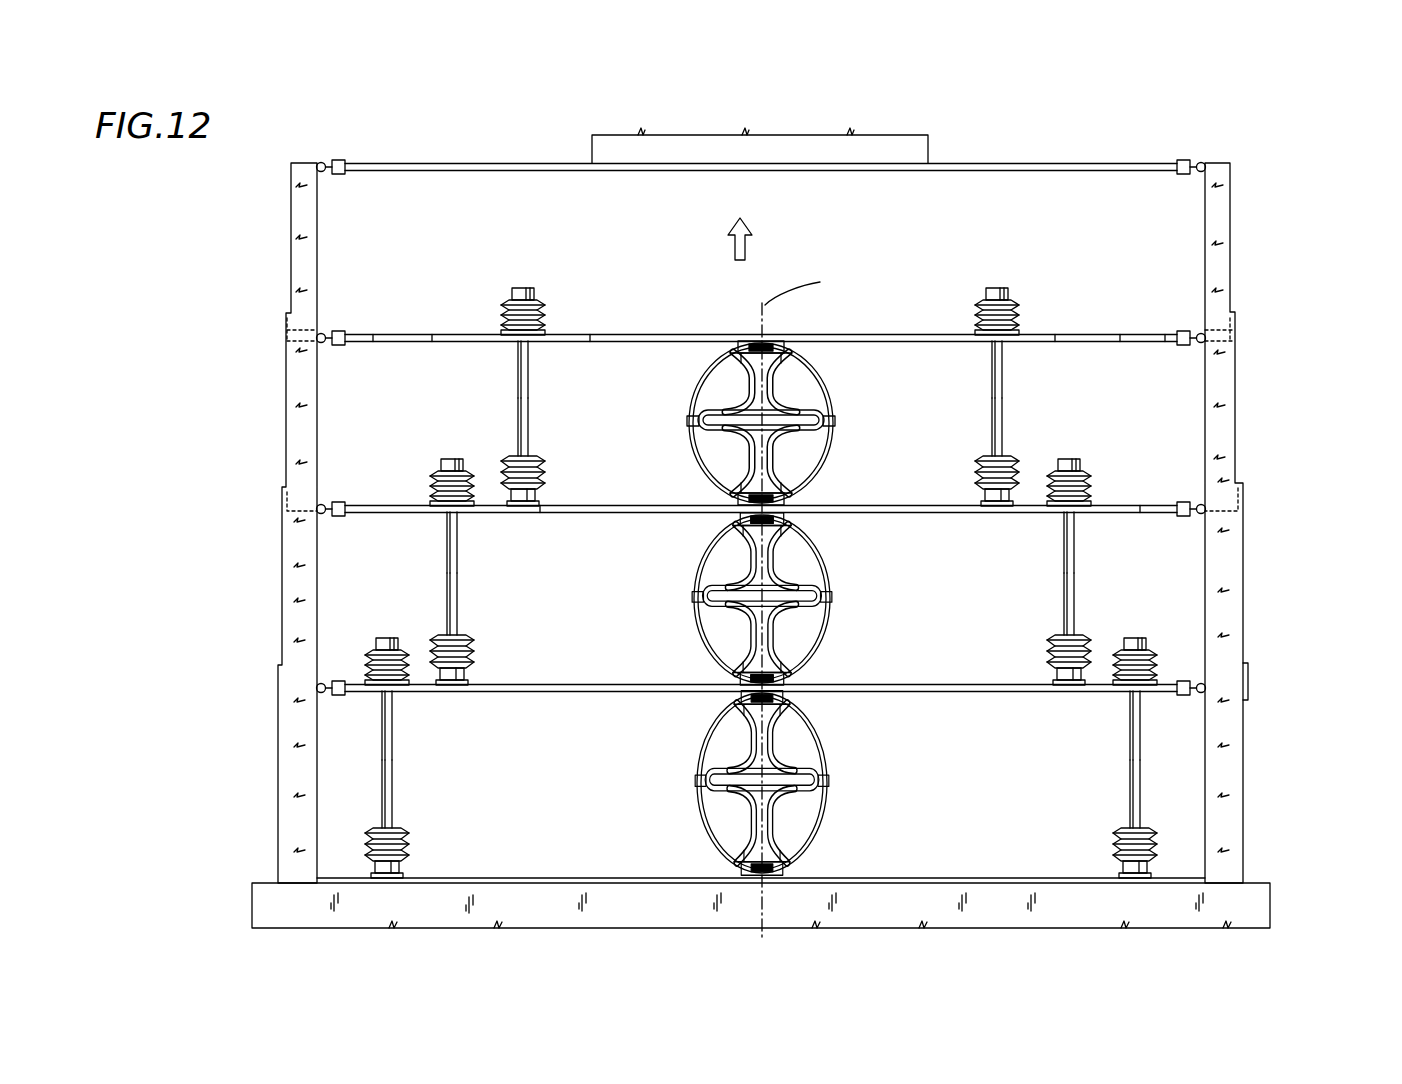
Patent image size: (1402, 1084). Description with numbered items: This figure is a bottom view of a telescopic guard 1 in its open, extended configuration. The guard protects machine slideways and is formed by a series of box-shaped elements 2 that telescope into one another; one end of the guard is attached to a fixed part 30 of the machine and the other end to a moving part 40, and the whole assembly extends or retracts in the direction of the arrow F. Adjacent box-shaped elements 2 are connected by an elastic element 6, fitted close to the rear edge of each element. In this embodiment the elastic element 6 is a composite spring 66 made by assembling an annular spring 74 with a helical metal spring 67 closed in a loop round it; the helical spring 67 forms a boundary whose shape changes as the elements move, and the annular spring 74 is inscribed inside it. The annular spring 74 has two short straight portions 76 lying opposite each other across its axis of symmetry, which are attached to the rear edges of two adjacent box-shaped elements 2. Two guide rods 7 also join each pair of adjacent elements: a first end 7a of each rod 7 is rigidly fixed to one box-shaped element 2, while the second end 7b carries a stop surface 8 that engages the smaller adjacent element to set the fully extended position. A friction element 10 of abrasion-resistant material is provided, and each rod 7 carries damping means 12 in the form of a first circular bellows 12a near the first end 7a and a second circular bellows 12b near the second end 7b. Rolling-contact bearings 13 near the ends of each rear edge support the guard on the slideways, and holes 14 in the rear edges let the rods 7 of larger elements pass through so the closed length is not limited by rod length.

The telescopic guard 1 is at (1255, 185).
The box-shaped element 2 is at (288, 238).
The elastic element 6 is at (740, 523).
The guide rod 7 is at (779, 597).
The first end of rod 7a is at (440, 625).
The second end of rod 7b is at (440, 522).
The stop surface 8 is at (448, 462).
The friction element 10 is at (430, 500).
The damping means 12 is at (783, 538).
The first circular bellows 12a is at (1025, 457).
The second circular bellows 12b is at (1027, 305).
The rolling-contact bearing 13 is at (1190, 330).
The hole 14 is at (380, 338).
The fixed part of the machine 30 is at (287, 905).
The moving part of the machine 40 is at (915, 152).
The composite spring 66 is at (683, 600).
The helical metal spring 67 is at (700, 368).
The annular spring 74 is at (780, 822).
The straight portion 76 is at (745, 338).